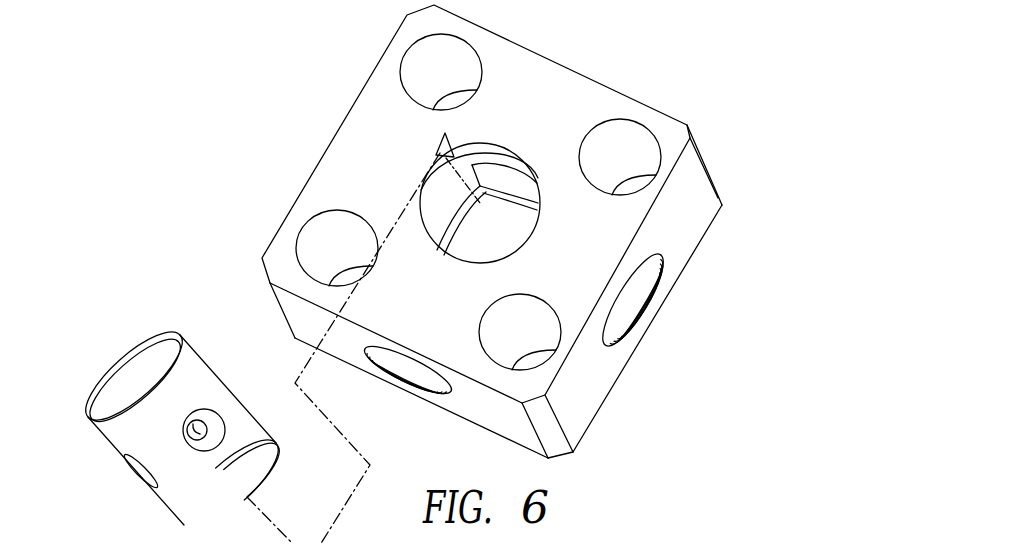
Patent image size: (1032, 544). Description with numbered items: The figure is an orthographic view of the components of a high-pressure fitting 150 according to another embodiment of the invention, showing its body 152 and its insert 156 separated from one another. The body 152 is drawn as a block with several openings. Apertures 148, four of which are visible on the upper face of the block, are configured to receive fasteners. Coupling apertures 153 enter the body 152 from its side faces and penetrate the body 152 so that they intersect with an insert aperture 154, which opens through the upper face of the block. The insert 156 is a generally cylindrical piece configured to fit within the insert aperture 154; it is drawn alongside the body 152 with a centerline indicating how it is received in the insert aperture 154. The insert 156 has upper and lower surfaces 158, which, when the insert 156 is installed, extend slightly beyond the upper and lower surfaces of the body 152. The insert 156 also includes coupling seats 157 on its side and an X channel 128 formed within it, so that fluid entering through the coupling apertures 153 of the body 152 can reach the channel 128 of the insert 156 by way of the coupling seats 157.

The high-pressure fitting 150 is at (775, 62).
The body 152 is at (550, 83).
The apertures 148 is at (622, 138).
The coupling apertures 153 is at (413, 370).
The insert aperture 154 is at (443, 155).
The insert 156 is at (188, 378).
The coupling seats 157 is at (213, 430).
The upper and lower surfaces 158 is at (118, 356).
The X channel 128 is at (200, 433).